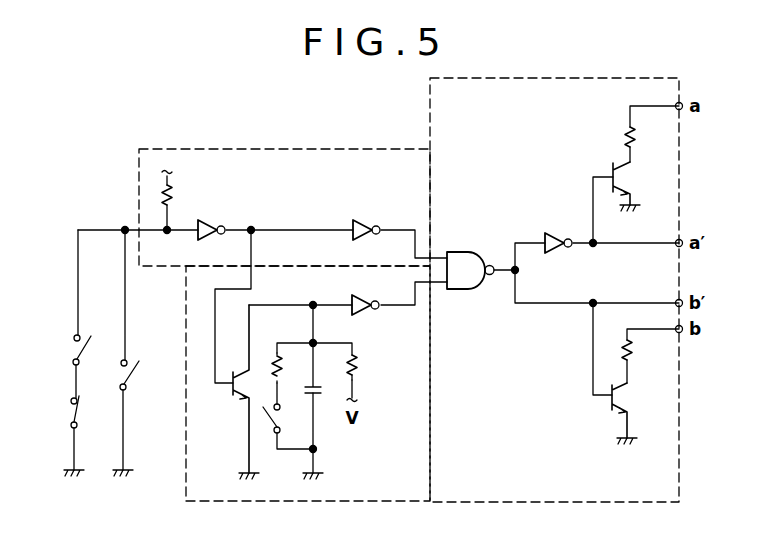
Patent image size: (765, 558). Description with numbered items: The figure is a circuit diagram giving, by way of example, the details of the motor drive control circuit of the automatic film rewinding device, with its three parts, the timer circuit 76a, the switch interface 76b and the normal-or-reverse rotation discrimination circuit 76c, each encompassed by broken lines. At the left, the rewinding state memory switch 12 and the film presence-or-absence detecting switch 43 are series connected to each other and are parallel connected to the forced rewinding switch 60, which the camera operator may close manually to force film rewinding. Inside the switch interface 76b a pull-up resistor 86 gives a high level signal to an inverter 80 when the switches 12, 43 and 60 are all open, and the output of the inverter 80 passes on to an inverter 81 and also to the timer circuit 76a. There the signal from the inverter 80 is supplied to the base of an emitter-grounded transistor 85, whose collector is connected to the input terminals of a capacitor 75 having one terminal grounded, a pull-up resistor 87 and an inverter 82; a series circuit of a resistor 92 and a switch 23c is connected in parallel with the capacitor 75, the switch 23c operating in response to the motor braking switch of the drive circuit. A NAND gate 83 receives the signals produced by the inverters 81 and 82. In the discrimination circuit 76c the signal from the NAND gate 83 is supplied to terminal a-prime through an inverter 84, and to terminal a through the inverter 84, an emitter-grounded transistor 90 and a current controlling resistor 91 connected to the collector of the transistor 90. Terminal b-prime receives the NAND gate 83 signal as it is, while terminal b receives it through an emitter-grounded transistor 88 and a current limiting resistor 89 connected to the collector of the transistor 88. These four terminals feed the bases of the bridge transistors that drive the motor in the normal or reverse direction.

The rewinding state memory switch 12 is at (86, 345).
The film presence-or-absence detecting switch 43 is at (77, 404).
The forced rewinding switch 60 is at (136, 373).
The pull-up resistor 86 is at (172, 196).
The inverter 80 is at (214, 223).
The inverter 81 is at (362, 225).
The inverter 82 is at (372, 312).
The NAND gate 83 is at (458, 252).
The inverter 84 is at (552, 233).
The transistor 85 is at (236, 398).
The resistor 92 is at (278, 356).
The capacitor 75 is at (322, 392).
The pull-up resistor 87 is at (362, 373).
The switch 23c is at (262, 432).
The transistor 88 is at (625, 398).
The current limiting resistor 89 is at (634, 349).
The transistor 90 is at (627, 177).
The current controlling resistor 91 is at (628, 137).
The timer circuit 76a is at (208, 501).
The switch interface 76b is at (297, 148).
The normal-or-reverse rotation discrimination circuit 76c is at (548, 503).